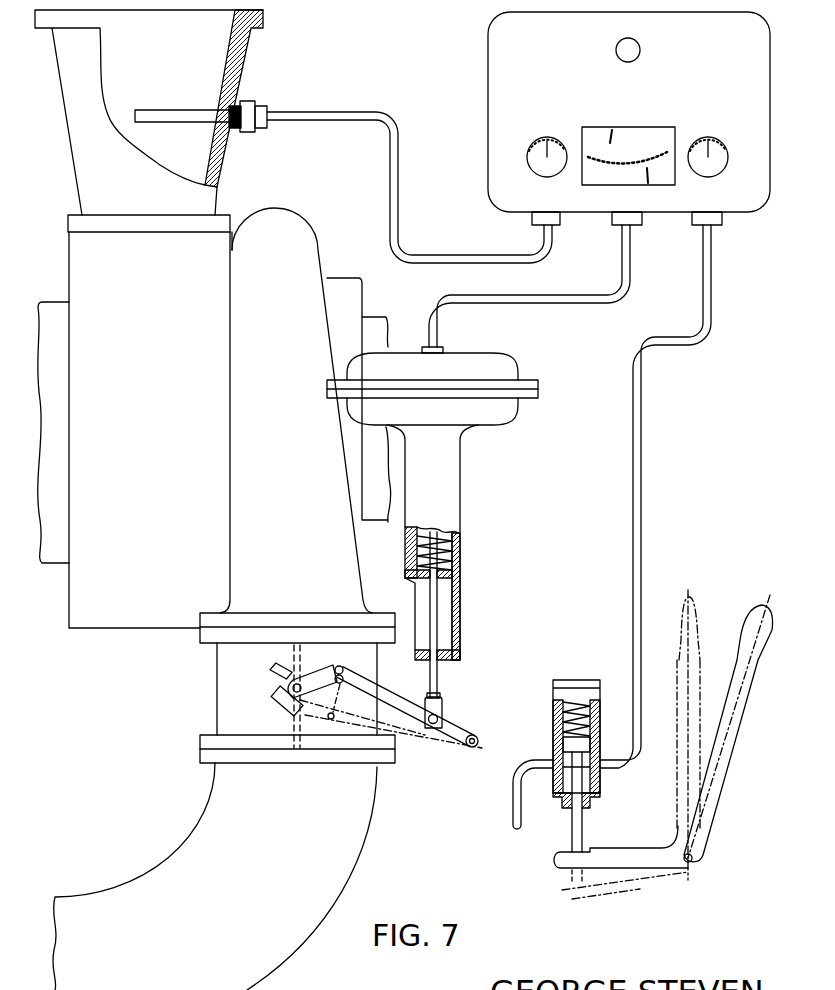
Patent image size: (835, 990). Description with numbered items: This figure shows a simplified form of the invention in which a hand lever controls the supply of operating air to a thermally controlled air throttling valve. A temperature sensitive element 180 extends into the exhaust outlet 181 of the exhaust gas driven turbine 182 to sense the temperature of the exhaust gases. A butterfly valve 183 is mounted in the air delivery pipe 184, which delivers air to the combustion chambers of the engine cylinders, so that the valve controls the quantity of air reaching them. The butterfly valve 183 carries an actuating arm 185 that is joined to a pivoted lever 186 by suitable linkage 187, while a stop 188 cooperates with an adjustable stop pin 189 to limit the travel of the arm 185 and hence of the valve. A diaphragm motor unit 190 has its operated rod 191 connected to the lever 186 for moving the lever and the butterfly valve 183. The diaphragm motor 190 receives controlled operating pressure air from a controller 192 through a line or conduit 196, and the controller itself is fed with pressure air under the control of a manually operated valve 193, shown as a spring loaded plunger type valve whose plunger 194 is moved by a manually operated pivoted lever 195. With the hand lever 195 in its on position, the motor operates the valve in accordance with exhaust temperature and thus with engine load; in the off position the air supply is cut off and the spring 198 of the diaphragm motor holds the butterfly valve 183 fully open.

The temperature sensitive element 180 is at (183, 112).
The exhaust outlet 181 is at (247, 66).
The exhaust gas driven turbine 182 is at (153, 613).
The butterfly valve 183 is at (300, 720).
The air delivery pipe 184 is at (348, 829).
The actuating arm 185 is at (317, 673).
The pivoted lever 186 is at (452, 728).
The linkage 187 is at (335, 664).
The stop 188 is at (275, 667).
The adjustable stop pin 189 is at (275, 690).
The diaphragm motor unit 190 is at (443, 489).
The operated rod 191 is at (437, 623).
The controller 192 is at (507, 58).
The manually operated valve 193 is at (553, 714).
The plunger 194 is at (568, 743).
The manually operated pivoted lever 195 is at (722, 760).
The line or conduit 196 is at (555, 300).
The spring 198 is at (458, 552).